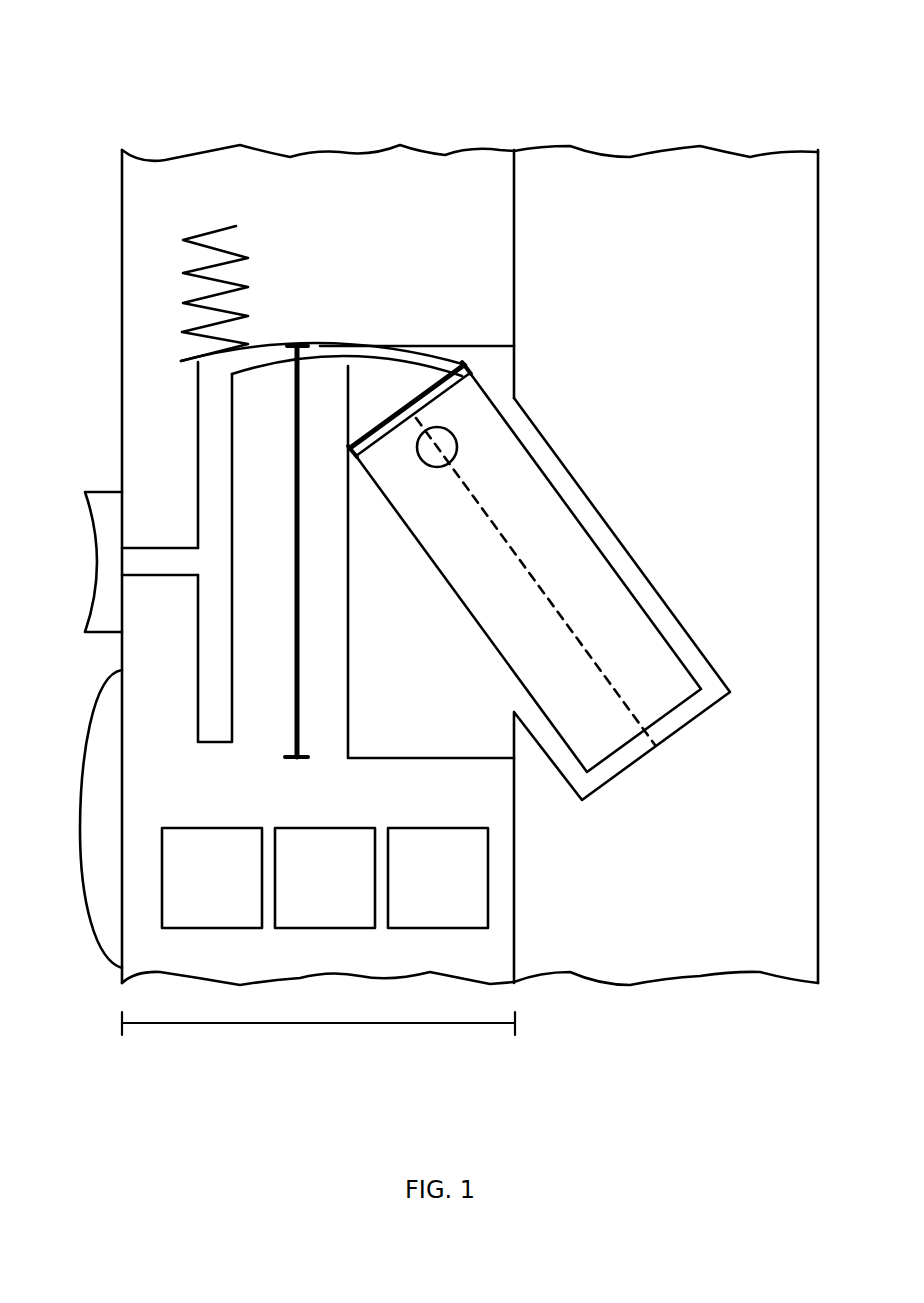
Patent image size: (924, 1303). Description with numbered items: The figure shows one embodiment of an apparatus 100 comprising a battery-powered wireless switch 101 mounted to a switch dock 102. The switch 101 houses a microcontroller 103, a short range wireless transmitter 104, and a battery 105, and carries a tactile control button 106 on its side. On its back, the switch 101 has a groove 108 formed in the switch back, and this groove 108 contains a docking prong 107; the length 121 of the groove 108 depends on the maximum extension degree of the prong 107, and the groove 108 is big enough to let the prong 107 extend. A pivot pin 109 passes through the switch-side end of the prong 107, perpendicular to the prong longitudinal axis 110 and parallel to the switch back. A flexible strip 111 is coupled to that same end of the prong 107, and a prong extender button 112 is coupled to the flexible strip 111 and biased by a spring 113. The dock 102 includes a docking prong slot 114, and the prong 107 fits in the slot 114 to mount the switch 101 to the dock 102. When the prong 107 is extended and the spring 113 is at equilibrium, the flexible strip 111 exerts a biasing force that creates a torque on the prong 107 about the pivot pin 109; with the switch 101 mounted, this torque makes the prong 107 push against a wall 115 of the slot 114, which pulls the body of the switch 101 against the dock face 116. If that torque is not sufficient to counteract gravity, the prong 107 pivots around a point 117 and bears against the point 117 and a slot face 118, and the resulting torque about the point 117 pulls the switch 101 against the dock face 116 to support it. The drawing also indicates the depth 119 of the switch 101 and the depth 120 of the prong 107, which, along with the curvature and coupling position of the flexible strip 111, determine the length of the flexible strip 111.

The apparatus 100 is at (102, 54).
The battery-powered wireless switch 101 is at (364, 150).
The switch dock 102 is at (690, 150).
The microcontroller 103 is at (234, 891).
The short range wireless transmitter 104 is at (347, 891).
The battery 105 is at (460, 891).
The tactile control button 106 is at (80, 825).
The docking prong 107 is at (513, 606).
The groove 108 is at (418, 614).
The pivot pin 109 is at (428, 467).
The prong longitudinal axis 110 is at (553, 600).
The flexible strip 111 is at (340, 345).
The prong extender button 112 is at (97, 556).
The spring 113 is at (237, 227).
The docking prong slot 114 is at (655, 588).
The wall 115 is at (562, 775).
The dock face 116 is at (514, 236).
The point 117 is at (506, 706).
The slot face 118 is at (692, 643).
The depth of switch 119 is at (282, 1023).
The depth of prong 120 is at (390, 428).
The length of groove 121 is at (295, 520).